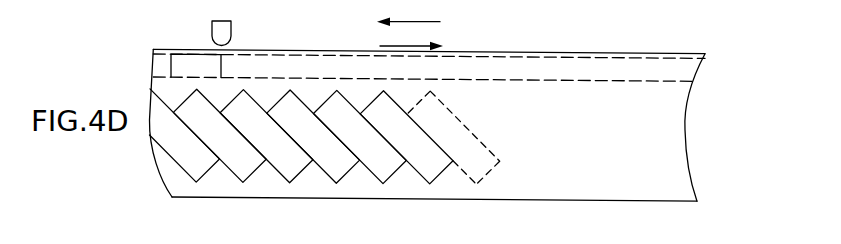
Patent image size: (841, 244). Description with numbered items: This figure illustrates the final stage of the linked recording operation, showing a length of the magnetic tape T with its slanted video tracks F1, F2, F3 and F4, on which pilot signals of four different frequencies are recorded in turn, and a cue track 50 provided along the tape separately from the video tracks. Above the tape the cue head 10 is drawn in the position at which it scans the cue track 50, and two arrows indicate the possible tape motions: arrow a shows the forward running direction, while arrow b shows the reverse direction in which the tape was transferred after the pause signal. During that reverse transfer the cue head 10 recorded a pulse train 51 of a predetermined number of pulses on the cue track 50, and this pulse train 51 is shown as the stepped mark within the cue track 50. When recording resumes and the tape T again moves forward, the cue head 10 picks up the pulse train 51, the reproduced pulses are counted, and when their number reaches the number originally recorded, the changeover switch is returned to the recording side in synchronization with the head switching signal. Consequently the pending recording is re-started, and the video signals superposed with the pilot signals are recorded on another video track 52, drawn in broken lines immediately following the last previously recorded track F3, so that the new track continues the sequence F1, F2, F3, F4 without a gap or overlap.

The cue head 10 is at (230, 32).
The pulse train 51 is at (221, 63).
The cue track 50 is at (565, 58).
The another video track 52 is at (500, 161).
The magnetic tape T is at (484, 50).
The arrow a is at (408, 13).
The arrow b is at (411, 37).
The video track F1 is at (313, 136).
The video track F2 is at (360, 136).
The video track F3 is at (313, 136).
The video track F4 is at (383, 160).